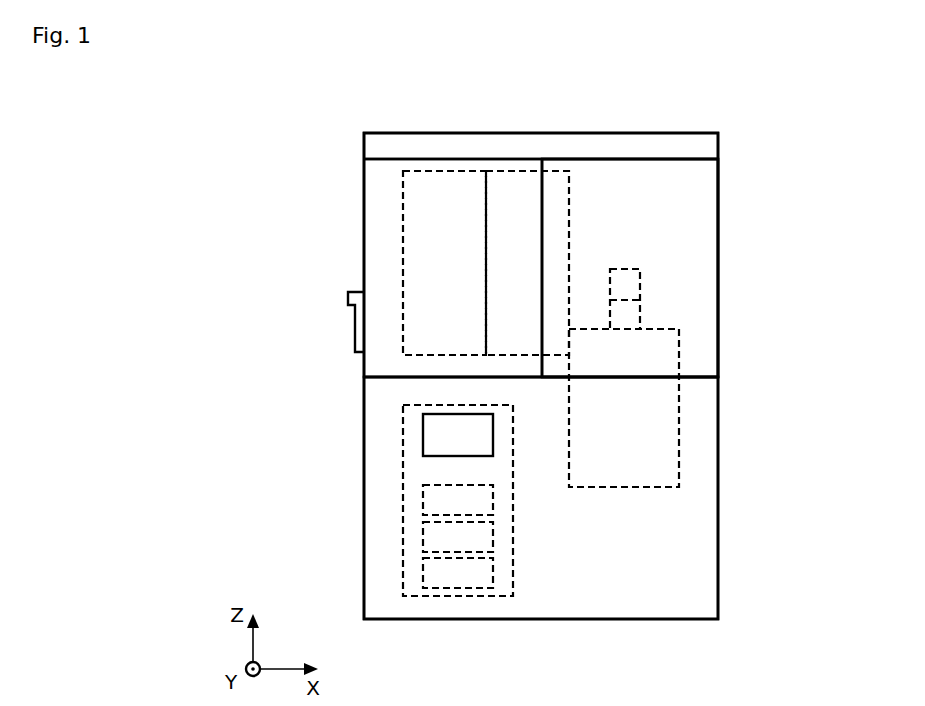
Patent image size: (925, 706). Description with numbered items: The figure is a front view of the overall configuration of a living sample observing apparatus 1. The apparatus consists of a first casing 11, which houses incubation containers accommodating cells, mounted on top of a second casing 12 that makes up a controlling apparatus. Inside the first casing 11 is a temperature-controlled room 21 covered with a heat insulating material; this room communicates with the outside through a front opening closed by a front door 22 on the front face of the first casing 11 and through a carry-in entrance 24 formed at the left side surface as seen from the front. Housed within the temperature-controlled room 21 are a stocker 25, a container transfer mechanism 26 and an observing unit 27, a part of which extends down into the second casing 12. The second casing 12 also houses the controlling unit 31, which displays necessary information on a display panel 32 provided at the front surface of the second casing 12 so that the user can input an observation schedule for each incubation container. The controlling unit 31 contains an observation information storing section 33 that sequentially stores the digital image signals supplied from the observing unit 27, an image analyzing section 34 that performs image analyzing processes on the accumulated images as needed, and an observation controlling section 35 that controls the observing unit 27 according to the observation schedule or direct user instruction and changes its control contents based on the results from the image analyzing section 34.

The living sample observing apparatus 1 is at (356, 217).
The first casing 11 is at (728, 217).
The second casing 12 is at (728, 493).
The temperature-controlled room 21 is at (641, 195).
The front door 22 is at (693, 300).
The carry-in entrance 24 is at (355, 326).
The stocker 25 is at (445, 170).
The container transfer mechanism 26 is at (526, 170).
The observing unit 27 is at (679, 398).
The controlling unit 31 is at (403, 468).
The display panel 32 is at (423, 436).
The observation information storing section 33 is at (423, 500).
The image analyzing section 34 is at (423, 537).
The observation controlling section 35 is at (423, 574).